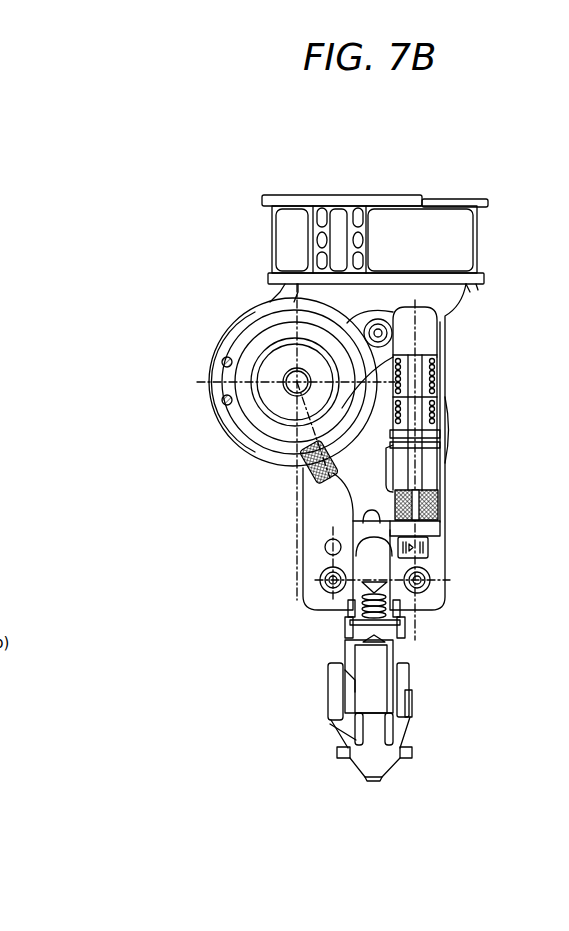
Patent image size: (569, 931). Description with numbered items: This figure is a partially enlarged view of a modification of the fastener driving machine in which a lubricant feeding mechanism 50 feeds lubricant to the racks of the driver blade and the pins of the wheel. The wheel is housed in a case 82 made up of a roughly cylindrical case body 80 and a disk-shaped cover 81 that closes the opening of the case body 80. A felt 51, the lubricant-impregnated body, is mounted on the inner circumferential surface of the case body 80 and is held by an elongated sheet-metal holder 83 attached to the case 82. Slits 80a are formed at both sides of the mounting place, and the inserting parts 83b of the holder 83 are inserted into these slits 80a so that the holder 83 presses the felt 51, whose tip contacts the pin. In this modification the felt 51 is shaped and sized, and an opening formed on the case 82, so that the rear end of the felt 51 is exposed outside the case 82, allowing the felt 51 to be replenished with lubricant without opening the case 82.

The case body 80 is at (270, 303).
The slits 80a is at (322, 482).
The cover 81 is at (262, 330).
The case 82 is at (200, 410).
The holder 83 is at (338, 458).
The inserting parts 83b is at (312, 462).
The felt 51 is at (283, 455).
The lubricant feeding mechanism 50 is at (327, 585).